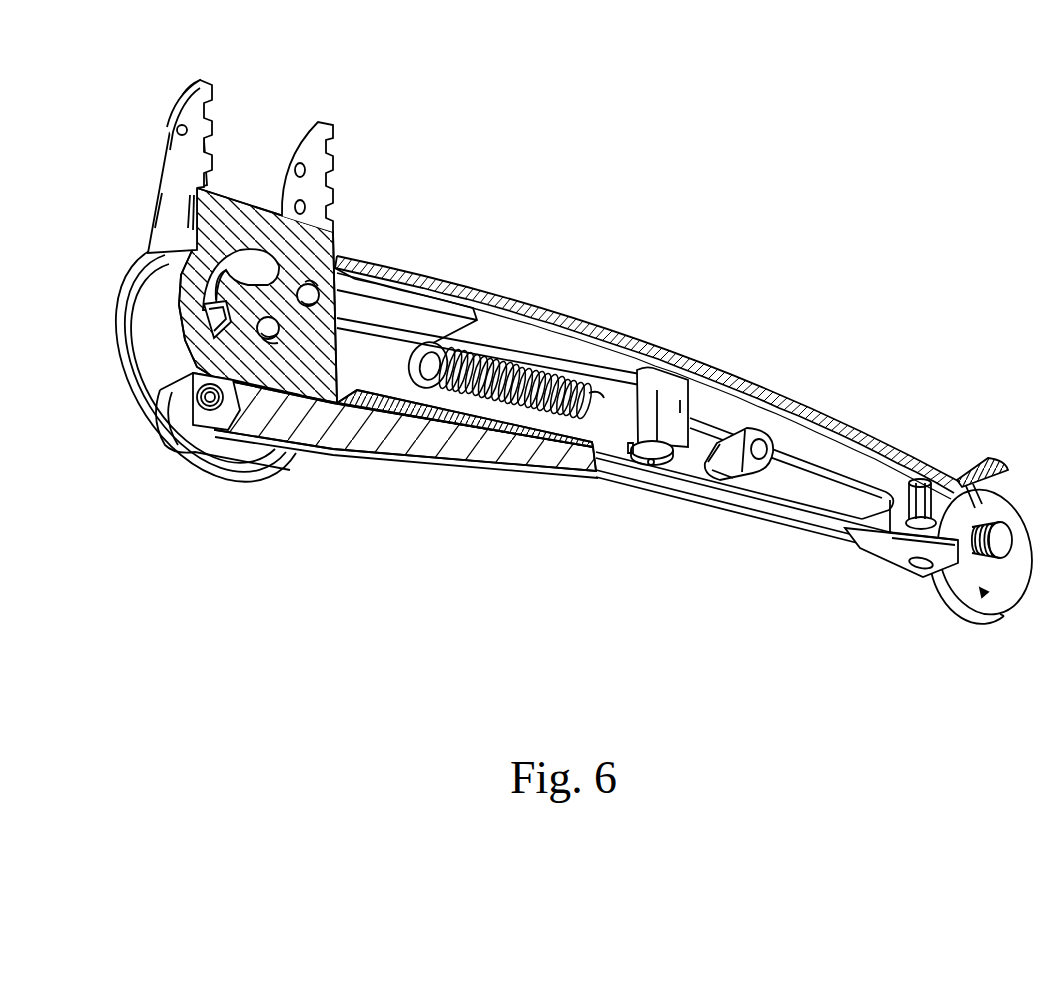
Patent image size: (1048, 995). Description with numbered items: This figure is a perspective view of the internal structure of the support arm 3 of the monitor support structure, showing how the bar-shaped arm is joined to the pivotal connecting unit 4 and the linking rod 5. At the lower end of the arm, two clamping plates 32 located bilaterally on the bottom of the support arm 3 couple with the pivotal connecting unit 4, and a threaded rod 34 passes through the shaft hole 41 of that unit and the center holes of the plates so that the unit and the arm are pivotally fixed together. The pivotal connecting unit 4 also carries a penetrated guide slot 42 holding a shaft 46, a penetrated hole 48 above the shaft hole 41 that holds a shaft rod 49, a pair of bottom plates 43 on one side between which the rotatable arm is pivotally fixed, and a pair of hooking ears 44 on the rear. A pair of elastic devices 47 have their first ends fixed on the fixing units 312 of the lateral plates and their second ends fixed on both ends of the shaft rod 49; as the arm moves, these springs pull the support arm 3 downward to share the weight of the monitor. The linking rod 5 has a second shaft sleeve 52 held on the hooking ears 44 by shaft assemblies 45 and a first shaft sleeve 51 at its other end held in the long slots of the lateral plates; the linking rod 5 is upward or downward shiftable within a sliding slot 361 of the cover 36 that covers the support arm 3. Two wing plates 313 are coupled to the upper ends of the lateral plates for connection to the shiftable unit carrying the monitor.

The support arm 3 is at (764, 378).
The fixing unit 312 is at (667, 390).
The wing plate 313 is at (950, 612).
The clamping plate 32 is at (116, 362).
The threaded rod 34 is at (273, 345).
The cover 36 is at (880, 548).
The sliding slot 361 is at (790, 507).
The pivotal connecting unit 4 is at (163, 210).
The shaft hole 41 is at (258, 330).
The guide slot 42 is at (225, 270).
The bottom plate 43 is at (182, 128).
The hooking ear 44 is at (187, 427).
The shaft assembly 45 is at (160, 421).
The shaft 46 is at (195, 306).
The elastic device 47 is at (510, 387).
The penetrated hole 48 is at (313, 285).
The shaft rod 49 is at (340, 258).
The linking rod 5 is at (399, 447).
The first shaft sleeve 51 is at (757, 437).
The second shaft sleeve 52 is at (167, 440).